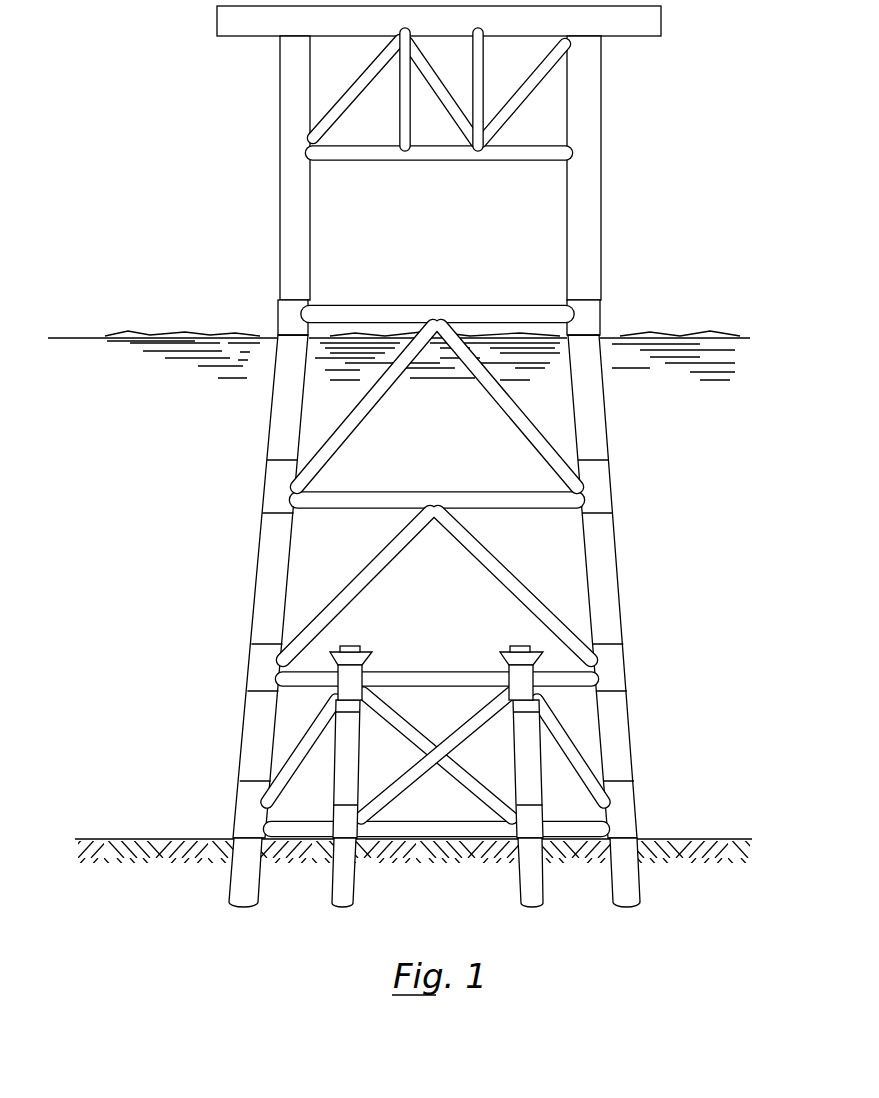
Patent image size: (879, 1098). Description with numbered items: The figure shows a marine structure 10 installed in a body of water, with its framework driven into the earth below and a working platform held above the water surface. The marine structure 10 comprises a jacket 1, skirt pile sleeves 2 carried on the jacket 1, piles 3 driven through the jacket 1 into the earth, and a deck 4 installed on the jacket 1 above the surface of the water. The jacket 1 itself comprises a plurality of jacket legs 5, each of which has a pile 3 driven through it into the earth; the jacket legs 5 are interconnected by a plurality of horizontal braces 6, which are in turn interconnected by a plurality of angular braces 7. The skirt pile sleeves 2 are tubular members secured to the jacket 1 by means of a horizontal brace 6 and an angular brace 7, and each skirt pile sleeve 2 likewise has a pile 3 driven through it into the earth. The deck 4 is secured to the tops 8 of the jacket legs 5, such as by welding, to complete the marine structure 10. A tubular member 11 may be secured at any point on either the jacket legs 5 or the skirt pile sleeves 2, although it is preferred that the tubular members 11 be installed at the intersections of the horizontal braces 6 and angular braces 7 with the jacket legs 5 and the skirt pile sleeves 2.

The jacket 1 is at (595, 415).
The skirt pile sleeves 2 is at (345, 770).
The piles 3 is at (350, 645).
The deck 4 is at (592, 203).
The jacket legs 5 is at (283, 418).
The horizontal braces 6 is at (352, 315).
The angular braces 7 is at (512, 408).
The tops of the jacket legs 8 is at (298, 300).
The marine structure 10 is at (628, 478).
The tubular member 11 is at (290, 323).